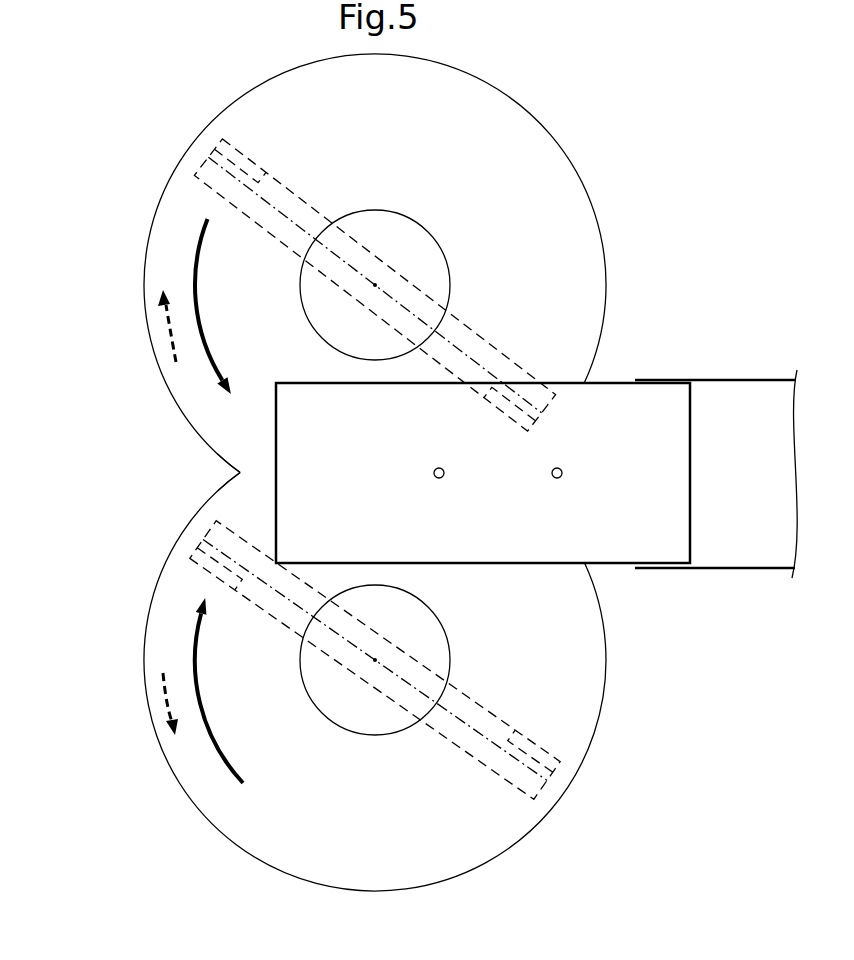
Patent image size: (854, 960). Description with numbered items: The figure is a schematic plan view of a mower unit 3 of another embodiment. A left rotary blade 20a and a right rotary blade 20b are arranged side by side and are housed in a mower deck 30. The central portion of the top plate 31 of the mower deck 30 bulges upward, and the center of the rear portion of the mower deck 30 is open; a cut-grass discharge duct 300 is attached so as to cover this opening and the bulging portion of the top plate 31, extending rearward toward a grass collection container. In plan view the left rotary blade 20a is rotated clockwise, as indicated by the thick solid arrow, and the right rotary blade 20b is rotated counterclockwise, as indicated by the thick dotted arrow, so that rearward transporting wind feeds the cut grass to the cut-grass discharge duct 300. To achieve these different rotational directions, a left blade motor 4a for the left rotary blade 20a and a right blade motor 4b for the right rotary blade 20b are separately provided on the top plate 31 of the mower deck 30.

The mower unit 3 is at (317, 472).
The mower deck 30 is at (185, 792).
The top plate 31 is at (250, 447).
The left blade motor 4a is at (345, 733).
The right blade motor 4b is at (417, 213).
The left rotary blade 20a is at (502, 777).
The right rotary blade 20b is at (290, 203).
The cut-grass discharge duct 300 is at (748, 493).